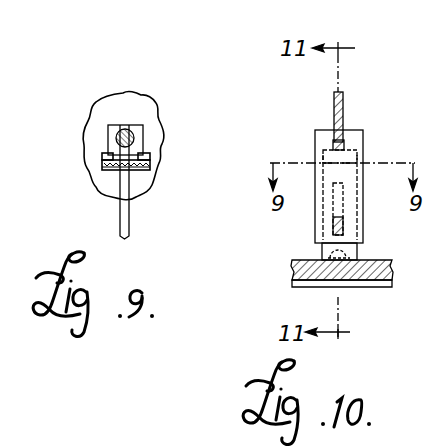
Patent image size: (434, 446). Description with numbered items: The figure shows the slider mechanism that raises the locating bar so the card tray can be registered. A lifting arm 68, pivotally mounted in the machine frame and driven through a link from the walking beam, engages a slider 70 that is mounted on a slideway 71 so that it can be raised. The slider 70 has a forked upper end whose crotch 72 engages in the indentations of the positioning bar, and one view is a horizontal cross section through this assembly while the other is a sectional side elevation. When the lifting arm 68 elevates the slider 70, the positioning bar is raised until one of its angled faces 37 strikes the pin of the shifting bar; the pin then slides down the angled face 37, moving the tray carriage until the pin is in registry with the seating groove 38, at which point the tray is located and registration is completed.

In FIG. 9, the lifting arm 68 is at (129, 212).
In FIG. 10, the lifting arm 68 is at (333, 225).
In FIG. 9, the slider 70 is at (147, 160).
In FIG. 10, the slider 70 is at (363, 200).
In FIG. 9, the slideway 71 is at (133, 146).
In FIG. 10, the slideway 71 is at (357, 248).
In FIG. 10, the crotch 72 is at (333, 147).
In FIG. 10, the angled faces 37 is at (345, 100).
In FIG. 10, the seating groove 38 is at (344, 147).